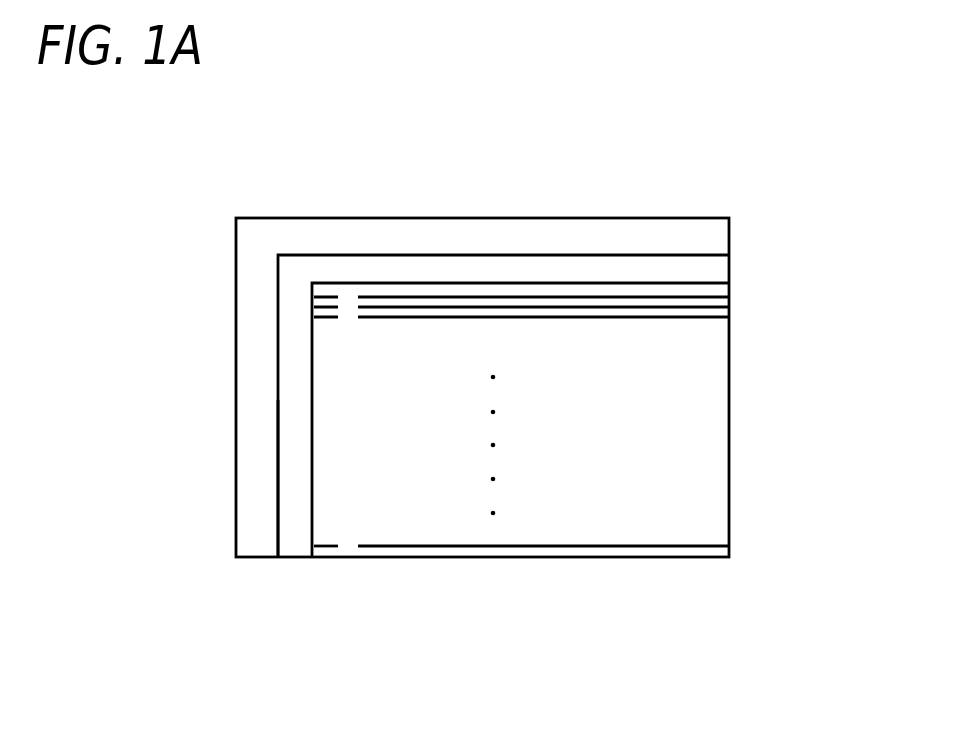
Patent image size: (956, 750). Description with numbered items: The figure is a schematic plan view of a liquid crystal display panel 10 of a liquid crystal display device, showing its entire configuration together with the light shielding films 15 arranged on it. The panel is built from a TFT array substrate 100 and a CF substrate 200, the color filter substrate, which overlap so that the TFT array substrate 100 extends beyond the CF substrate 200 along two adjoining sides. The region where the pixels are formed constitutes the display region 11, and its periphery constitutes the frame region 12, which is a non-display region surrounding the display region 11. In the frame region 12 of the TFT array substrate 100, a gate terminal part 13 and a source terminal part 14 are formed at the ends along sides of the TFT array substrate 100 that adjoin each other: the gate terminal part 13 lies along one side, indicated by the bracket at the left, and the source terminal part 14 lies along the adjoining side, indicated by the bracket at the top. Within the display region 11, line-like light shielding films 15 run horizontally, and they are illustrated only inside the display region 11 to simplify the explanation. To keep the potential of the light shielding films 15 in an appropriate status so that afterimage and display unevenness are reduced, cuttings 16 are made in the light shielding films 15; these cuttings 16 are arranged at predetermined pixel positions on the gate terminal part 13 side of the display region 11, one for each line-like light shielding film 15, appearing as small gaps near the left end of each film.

The liquid crystal display panel 10 is at (748, 185).
The TFT array substrate 100 is at (250, 247).
The CF substrate 200 is at (293, 260).
The display region 11 is at (725, 348).
The frame region 12 is at (275, 545).
The gate terminal part 13 is at (218, 300).
The source terminal part 14 is at (727, 202).
The light shielding film 15 is at (630, 547).
The cutting 16 is at (347, 545).